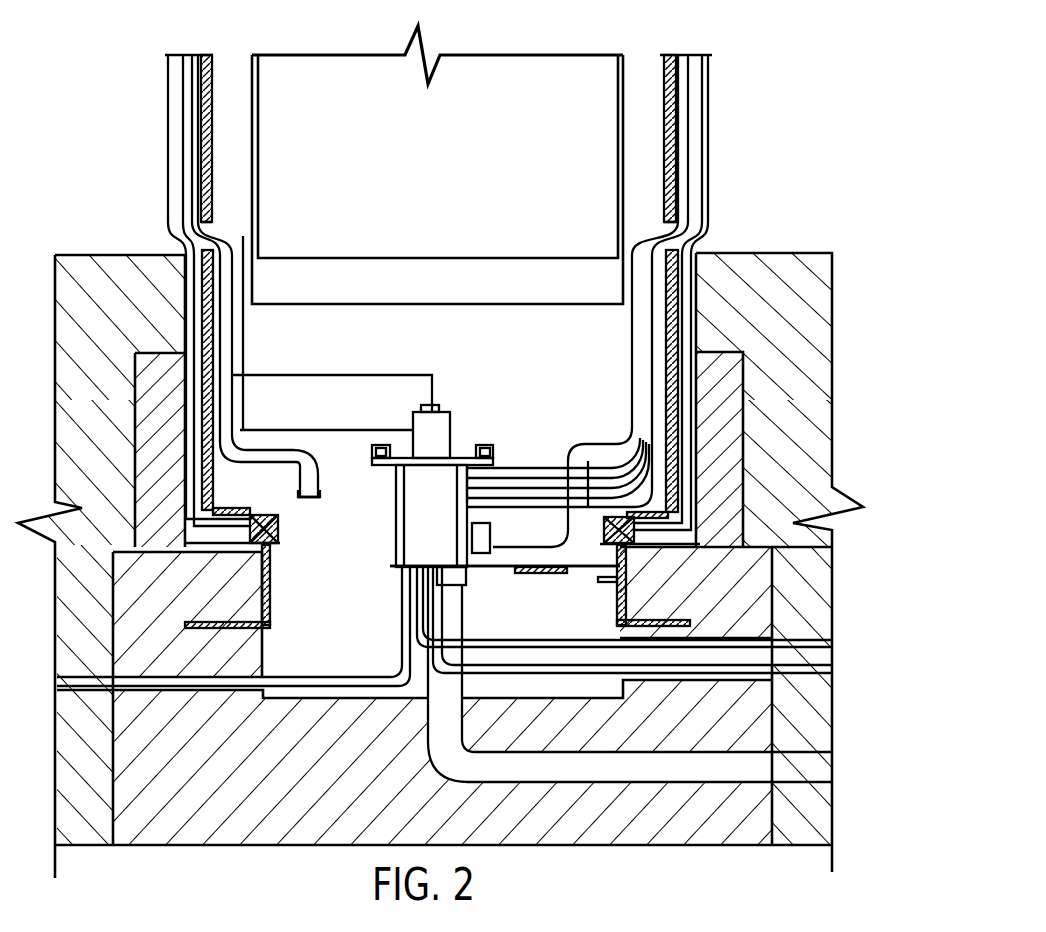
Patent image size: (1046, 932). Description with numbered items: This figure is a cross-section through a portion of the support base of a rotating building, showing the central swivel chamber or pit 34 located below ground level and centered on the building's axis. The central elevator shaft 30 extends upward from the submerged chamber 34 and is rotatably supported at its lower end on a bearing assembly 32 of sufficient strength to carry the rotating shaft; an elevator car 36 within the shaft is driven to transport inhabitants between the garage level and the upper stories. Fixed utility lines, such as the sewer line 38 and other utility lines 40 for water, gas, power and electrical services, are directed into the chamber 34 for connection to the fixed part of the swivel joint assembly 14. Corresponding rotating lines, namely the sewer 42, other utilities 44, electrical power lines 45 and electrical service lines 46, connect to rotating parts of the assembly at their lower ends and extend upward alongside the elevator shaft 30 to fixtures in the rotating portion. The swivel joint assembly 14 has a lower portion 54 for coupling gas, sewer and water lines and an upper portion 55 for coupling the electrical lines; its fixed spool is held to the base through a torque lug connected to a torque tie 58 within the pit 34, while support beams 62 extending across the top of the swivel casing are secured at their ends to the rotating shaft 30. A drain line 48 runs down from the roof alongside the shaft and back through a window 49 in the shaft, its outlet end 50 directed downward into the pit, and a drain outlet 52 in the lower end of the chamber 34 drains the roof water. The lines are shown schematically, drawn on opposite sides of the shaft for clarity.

The swivel joint assembly 14 is at (518, 431).
The central elevator shaft 30 is at (670, 82).
The bearing assembly 32 is at (272, 516).
The central swivel chamber or pit 34 is at (490, 617).
The elevator car 36 is at (540, 72).
The sewer line 38 is at (815, 657).
The other utility lines 40 is at (413, 660).
The sewer 42 is at (706, 138).
The other utilities 44 is at (518, 505).
The electrical power lines 45 is at (312, 432).
The electrical service lines 46 is at (372, 378).
The drain line 48 is at (172, 213).
The window 49 is at (207, 222).
The outlet end 50 is at (312, 497).
The drain outlet 52 is at (813, 767).
The lower portion 54 is at (410, 504).
The upper portion 55 is at (420, 425).
The torque tie 58 is at (545, 576).
The support beams 62 is at (487, 445).